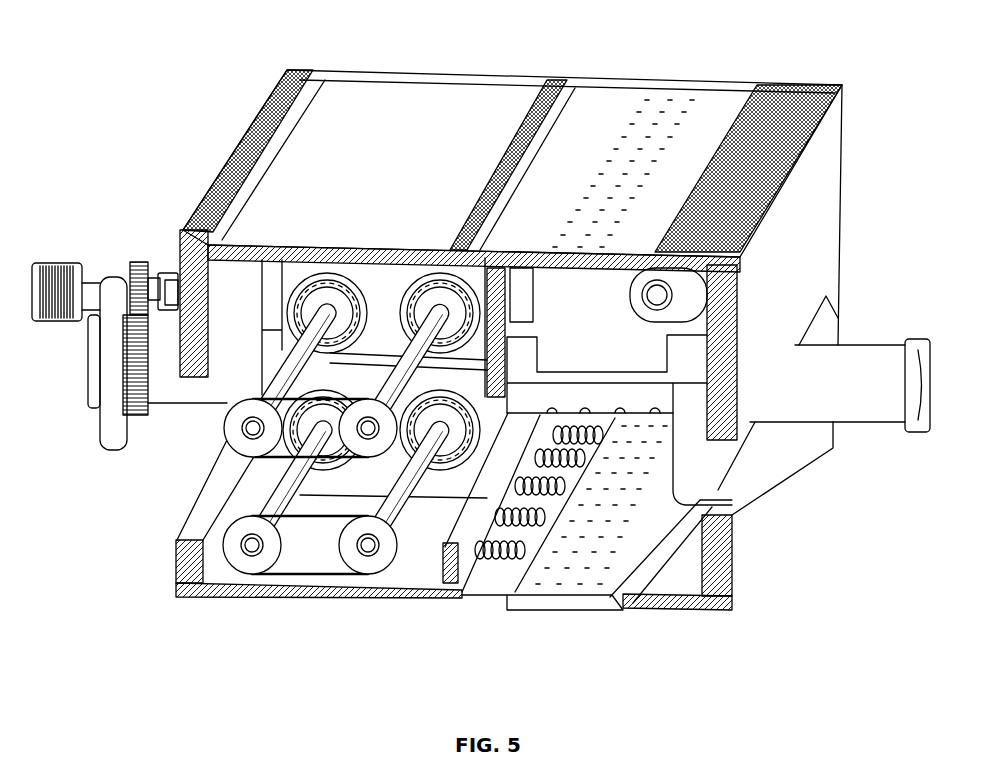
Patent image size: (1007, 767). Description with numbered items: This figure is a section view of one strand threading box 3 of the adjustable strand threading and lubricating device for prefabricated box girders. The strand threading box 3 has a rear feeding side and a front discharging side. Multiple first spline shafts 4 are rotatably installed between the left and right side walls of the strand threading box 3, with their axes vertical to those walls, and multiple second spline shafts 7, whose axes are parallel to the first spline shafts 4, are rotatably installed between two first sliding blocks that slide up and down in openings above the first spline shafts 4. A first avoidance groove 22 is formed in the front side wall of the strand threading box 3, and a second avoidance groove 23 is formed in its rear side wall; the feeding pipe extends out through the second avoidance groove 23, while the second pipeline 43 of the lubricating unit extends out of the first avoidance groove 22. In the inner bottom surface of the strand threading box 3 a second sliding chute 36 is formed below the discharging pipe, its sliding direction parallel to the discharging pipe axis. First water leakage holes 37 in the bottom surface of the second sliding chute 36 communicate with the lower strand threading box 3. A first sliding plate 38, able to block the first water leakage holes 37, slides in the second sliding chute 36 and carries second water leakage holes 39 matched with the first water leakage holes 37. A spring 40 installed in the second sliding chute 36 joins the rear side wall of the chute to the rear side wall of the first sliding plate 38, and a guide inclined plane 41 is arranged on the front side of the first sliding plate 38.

The strand threading box 3 is at (817, 215).
The first spline shaft 4 is at (283, 498).
The second spline shaft 7 is at (290, 358).
The first avoidance groove 22 is at (758, 450).
The second avoidance groove 23 is at (210, 440).
The second sliding chute 36 is at (592, 118).
The first water leakage hole 37 is at (662, 108).
The first sliding plate 38 is at (567, 600).
The second water leakage hole 39 is at (587, 587).
The spring 40 is at (508, 565).
The guide inclined plane 41 is at (627, 583).
The second pipeline 43 is at (837, 367).